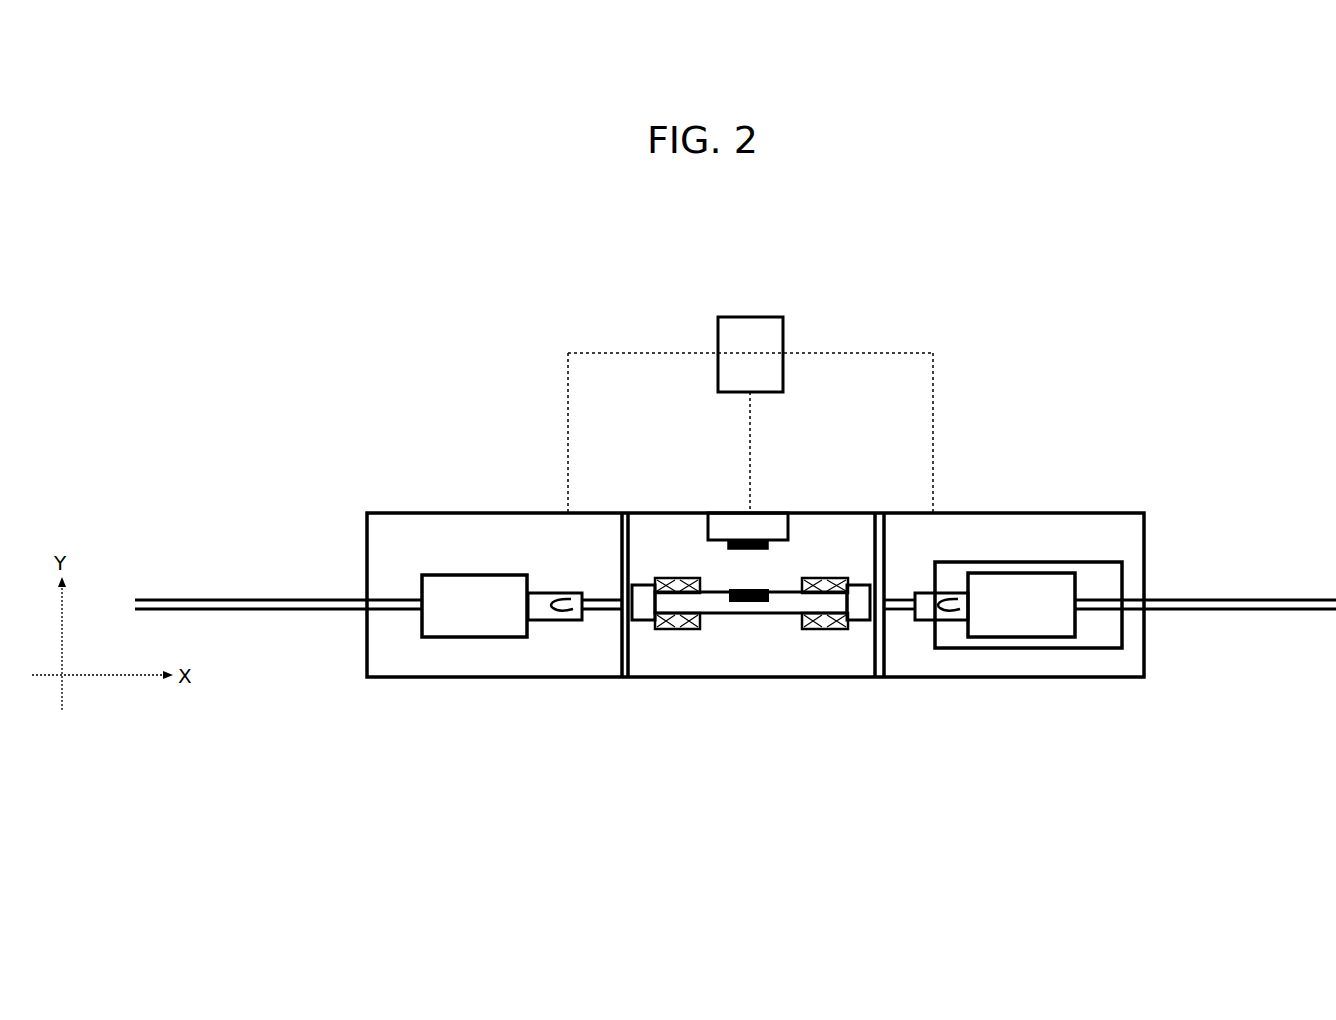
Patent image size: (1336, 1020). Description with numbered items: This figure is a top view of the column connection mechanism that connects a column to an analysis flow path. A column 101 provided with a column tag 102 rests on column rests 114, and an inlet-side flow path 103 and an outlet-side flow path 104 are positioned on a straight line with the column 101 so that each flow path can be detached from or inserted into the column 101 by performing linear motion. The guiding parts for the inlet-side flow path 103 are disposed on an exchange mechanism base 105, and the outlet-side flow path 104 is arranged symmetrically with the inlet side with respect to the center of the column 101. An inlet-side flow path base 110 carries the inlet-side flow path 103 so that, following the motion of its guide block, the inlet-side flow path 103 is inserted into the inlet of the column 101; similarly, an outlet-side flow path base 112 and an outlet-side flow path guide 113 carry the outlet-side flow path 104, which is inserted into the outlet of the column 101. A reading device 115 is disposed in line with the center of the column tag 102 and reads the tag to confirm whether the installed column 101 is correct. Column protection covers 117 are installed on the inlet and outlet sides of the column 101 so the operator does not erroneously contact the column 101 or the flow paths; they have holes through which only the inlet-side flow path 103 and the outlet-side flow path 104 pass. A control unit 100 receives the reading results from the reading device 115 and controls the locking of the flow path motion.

The control unit 100 is at (732, 321).
The column 101 is at (651, 618).
The column tag 102 is at (748, 604).
The inlet-side flow path 103 is at (248, 600).
The outlet-side flow path 104 is at (1287, 600).
The exchange mechanism base 105 is at (398, 514).
The inlet-side flow path base 110 is at (403, 628).
The outlet-side flow path base 112 is at (1100, 628).
The outlet-side flow path guide 113 is at (1033, 600).
The column rests 114 is at (680, 579).
The reading device 115 is at (753, 535).
The column protection covers 117 is at (621, 540).